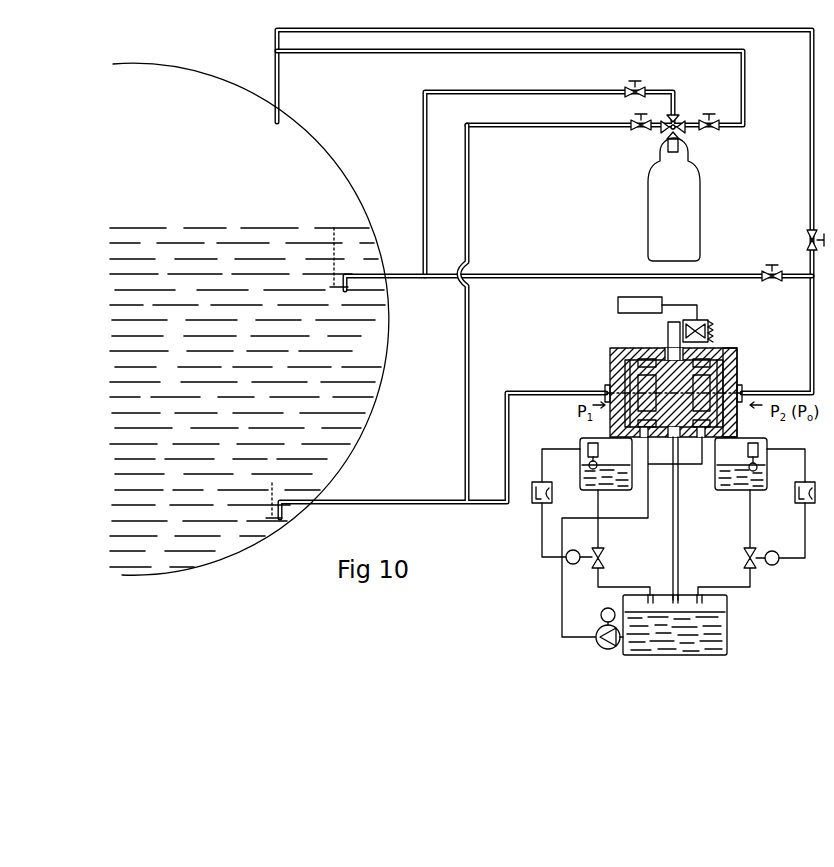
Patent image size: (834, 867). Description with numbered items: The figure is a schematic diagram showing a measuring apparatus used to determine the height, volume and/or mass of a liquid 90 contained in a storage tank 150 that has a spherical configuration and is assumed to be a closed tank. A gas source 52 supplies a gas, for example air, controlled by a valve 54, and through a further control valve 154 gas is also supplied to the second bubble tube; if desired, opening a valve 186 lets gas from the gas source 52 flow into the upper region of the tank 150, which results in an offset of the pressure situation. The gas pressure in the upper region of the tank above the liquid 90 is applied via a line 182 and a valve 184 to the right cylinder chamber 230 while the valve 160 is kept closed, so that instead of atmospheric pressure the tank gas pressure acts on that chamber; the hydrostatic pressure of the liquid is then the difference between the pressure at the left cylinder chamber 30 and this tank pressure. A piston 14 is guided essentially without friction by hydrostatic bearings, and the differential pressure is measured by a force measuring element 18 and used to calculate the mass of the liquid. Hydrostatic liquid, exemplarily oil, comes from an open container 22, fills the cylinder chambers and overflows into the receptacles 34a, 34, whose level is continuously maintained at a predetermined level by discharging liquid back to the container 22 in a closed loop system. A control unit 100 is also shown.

The liquid 90 is at (238, 228).
The storage tank 150 is at (393, 413).
The control valve 154 is at (647, 90).
The line 182 is at (779, 33).
The valve 54 is at (634, 131).
The gas source 52 is at (688, 203).
The valve 186 is at (713, 131).
The valve 184 is at (810, 234).
The valve 160 is at (773, 283).
The control unit 100 is at (618, 302).
The force measuring element 18 is at (702, 322).
The piston 14 is at (677, 380).
The cylinder chamber 30 is at (610, 358).
The right cylinder chamber 230 is at (740, 359).
The receptacle 34 is at (580, 465).
The receptacle 34a is at (767, 469).
The container 22 is at (735, 625).